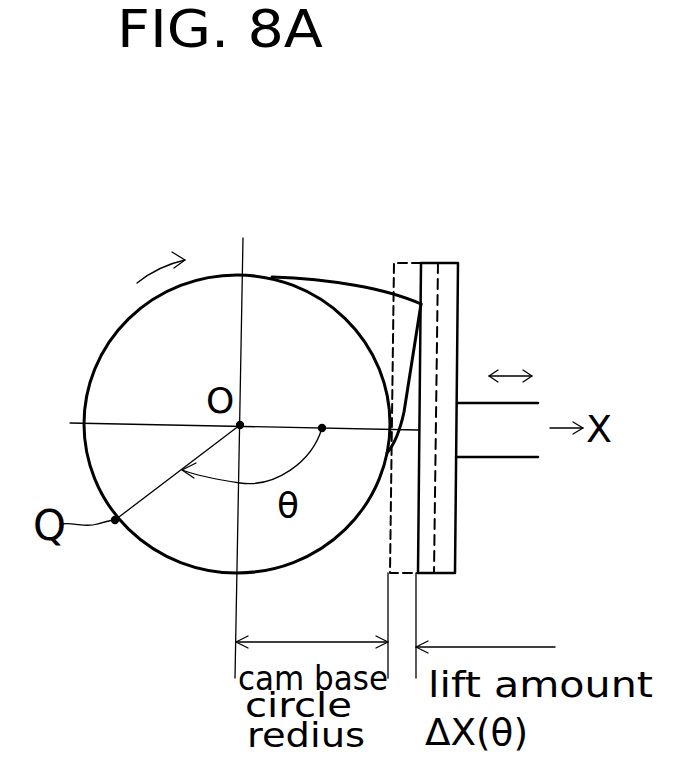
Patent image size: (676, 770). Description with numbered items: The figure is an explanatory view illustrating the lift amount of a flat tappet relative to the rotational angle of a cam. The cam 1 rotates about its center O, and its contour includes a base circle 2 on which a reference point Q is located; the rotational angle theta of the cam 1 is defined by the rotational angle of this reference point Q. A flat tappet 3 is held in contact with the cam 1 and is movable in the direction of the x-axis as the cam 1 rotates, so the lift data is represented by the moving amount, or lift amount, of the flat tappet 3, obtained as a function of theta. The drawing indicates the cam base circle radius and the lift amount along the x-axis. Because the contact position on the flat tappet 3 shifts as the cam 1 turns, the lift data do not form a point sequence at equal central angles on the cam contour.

The cam 1 is at (318, 247).
The base circle 2 is at (165, 562).
The flat tappet 3 is at (462, 263).